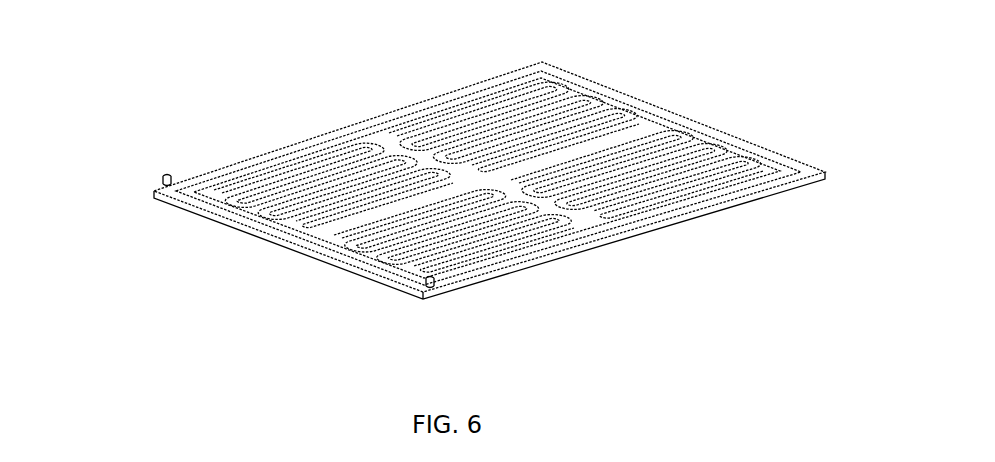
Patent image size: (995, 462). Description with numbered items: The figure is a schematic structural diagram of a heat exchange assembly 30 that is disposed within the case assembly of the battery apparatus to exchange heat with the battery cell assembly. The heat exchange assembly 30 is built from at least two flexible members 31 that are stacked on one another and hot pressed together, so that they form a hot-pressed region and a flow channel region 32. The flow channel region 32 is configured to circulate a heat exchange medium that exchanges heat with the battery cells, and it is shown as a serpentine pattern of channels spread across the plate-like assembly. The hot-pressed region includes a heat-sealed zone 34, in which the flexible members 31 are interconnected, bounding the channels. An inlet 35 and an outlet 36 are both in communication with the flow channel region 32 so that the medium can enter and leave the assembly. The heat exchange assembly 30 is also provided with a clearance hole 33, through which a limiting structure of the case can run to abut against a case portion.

The heat exchange assembly 30 is at (375, 52).
The flexible member 31 is at (382, 288).
The flow channel region 32 is at (497, 86).
The clearance hole 33 is at (255, 146).
The heat-sealed zone 34 is at (612, 105).
The inlet 35 is at (445, 300).
The outlet 36 is at (145, 168).